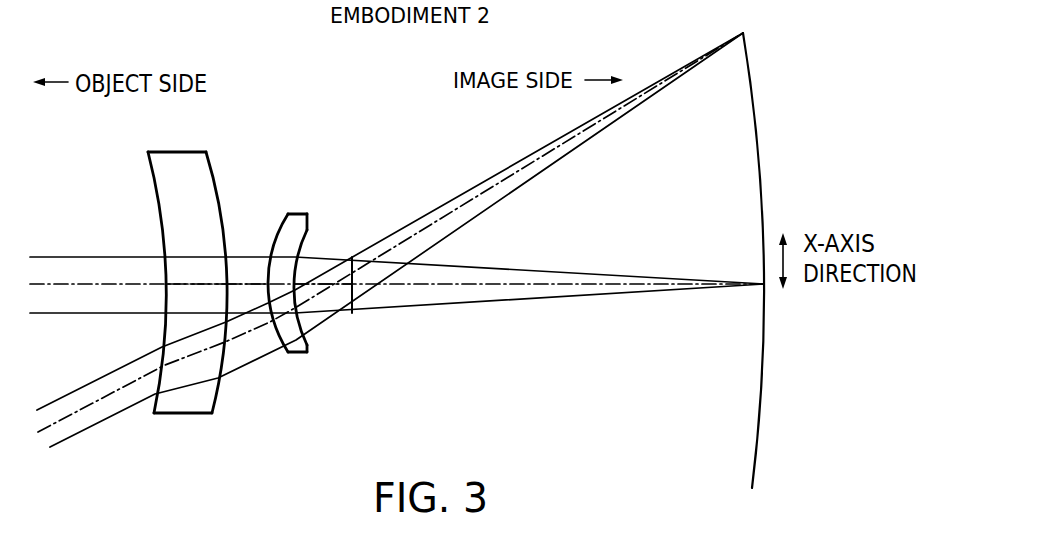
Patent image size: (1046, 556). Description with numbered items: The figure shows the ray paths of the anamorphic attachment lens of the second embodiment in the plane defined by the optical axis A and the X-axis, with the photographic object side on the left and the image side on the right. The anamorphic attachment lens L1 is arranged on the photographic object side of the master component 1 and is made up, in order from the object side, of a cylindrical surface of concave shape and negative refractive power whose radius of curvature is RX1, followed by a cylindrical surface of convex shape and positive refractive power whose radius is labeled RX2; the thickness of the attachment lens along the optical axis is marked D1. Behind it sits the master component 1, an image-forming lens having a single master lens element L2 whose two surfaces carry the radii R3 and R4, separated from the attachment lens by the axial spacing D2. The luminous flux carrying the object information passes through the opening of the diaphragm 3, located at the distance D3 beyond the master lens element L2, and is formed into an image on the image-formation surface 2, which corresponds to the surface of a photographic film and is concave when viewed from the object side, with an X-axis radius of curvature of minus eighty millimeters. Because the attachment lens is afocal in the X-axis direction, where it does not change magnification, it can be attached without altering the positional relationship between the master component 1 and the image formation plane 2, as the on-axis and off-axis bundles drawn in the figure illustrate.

The master component 1 is at (220, 305).
The image-formation surface 2 is at (762, 333).
The diaphragm 3 is at (353, 320).
The optical axis A is at (53, 283).
The anamorphic attachment lens L1 is at (181, 305).
The master lens element L2 is at (304, 296).
The radius of curvature of the object-side cylindrical surface RX1 is at (153, 177).
The image-side surface of first lens (radius) RX2 is at (212, 163).
The object-side surface of second lens (radius) R3 is at (287, 215).
The image-side surface of second lens (radius) R4 is at (303, 230).
The thickness of first lens on axis D1 is at (183, 282).
The air gap between first and second lens D2 is at (248, 284).
The distance from second lens to stop D3 is at (288, 275).